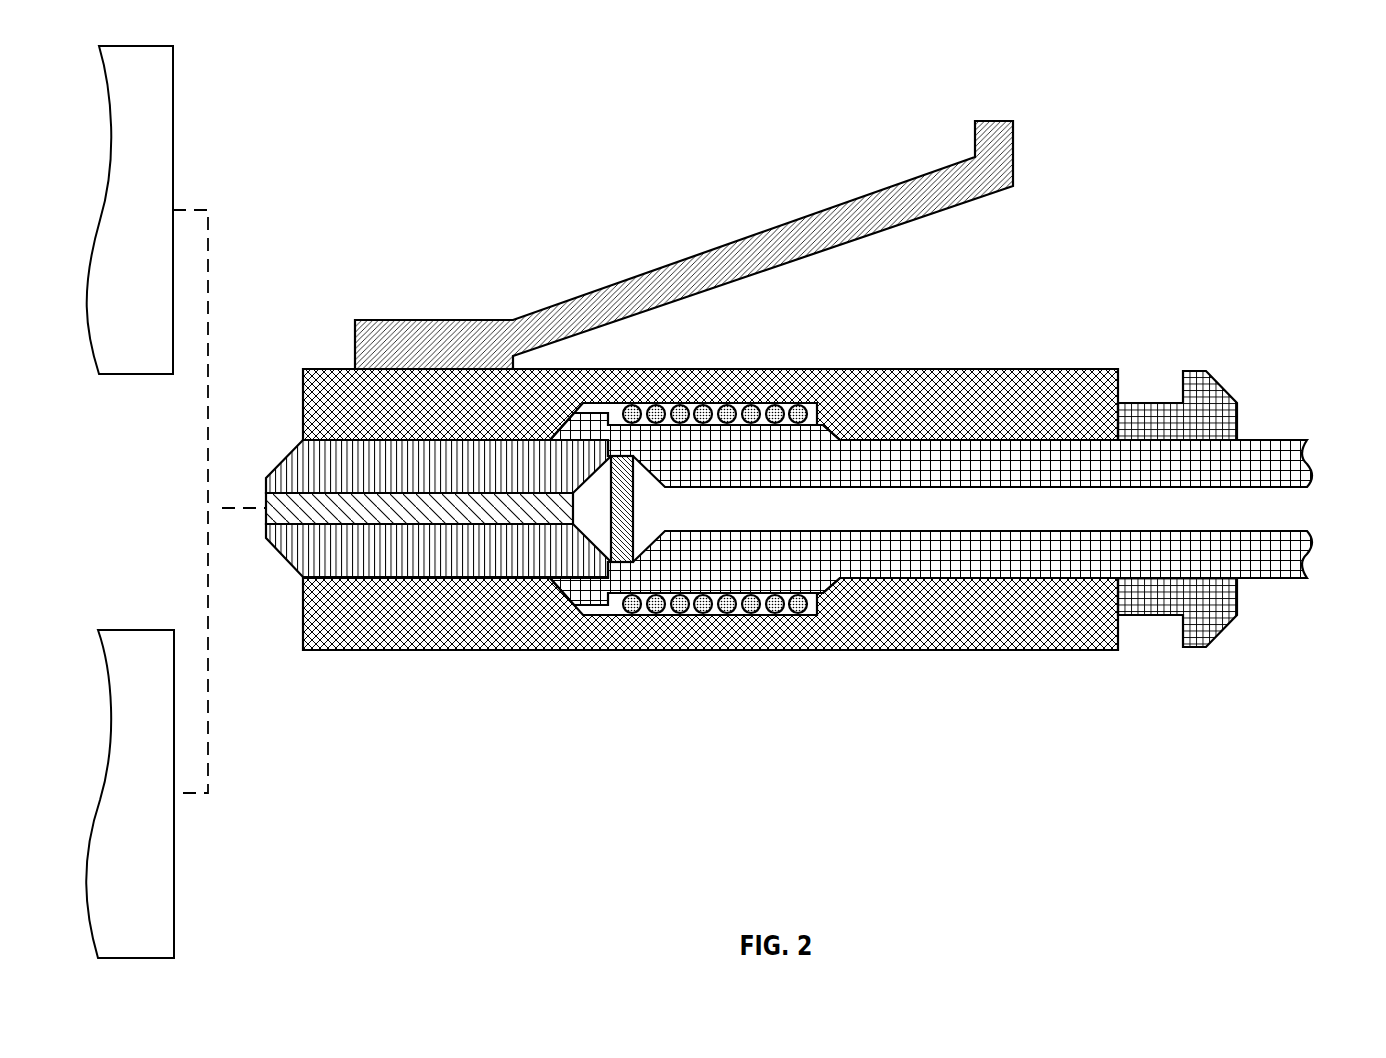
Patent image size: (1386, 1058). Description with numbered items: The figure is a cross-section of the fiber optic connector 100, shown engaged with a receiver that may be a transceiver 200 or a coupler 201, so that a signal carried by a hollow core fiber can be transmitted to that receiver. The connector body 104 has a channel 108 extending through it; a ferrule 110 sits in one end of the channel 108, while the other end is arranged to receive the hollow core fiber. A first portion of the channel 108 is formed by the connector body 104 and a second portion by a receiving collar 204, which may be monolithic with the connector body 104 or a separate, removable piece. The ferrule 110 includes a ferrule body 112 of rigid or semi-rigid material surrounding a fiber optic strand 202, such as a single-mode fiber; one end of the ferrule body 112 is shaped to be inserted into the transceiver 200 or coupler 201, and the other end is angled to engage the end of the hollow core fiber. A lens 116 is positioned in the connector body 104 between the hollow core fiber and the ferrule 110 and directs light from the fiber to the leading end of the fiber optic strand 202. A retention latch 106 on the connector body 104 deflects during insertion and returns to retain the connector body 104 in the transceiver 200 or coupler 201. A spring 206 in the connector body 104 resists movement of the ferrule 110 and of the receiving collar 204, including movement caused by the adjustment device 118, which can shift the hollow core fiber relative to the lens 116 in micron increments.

The fiber optic connector 100 is at (1280, 81).
The connector body 104 is at (993, 369).
The retention latch 106 is at (996, 121).
The channel 108 is at (1282, 508).
The ferrule 110 is at (283, 462).
The ferrule body 112 is at (300, 553).
The lens 116 is at (634, 503).
The adjustment device 118 is at (1152, 403).
The transceiver 200 is at (173, 46).
The coupler 201 is at (174, 958).
The fiber optic strand 202 is at (419, 508).
The receiving collar 204 is at (1283, 459).
The spring 206 is at (708, 404).